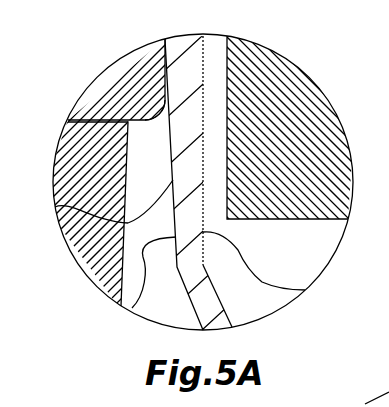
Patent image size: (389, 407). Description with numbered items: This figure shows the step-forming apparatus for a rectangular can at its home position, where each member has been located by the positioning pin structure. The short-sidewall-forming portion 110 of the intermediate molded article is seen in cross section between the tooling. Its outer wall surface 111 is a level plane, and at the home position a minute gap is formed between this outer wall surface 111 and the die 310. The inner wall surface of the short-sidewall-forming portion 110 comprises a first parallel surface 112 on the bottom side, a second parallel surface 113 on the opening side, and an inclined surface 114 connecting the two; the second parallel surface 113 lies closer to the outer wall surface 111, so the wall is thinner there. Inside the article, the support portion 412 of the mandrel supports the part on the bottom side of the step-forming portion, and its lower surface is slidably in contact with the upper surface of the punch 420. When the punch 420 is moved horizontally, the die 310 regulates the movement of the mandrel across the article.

The short-sidewall-forming portion 110 is at (213, 72).
The outer wall surface 111 is at (305, 290).
The first parallel surface 112 is at (140, 62).
The second parallel surface 113 is at (132, 308).
The inclined surface 114 is at (78, 242).
The die 310 is at (280, 85).
The support portion 412 is at (113, 75).
The punch 420 is at (55, 207).